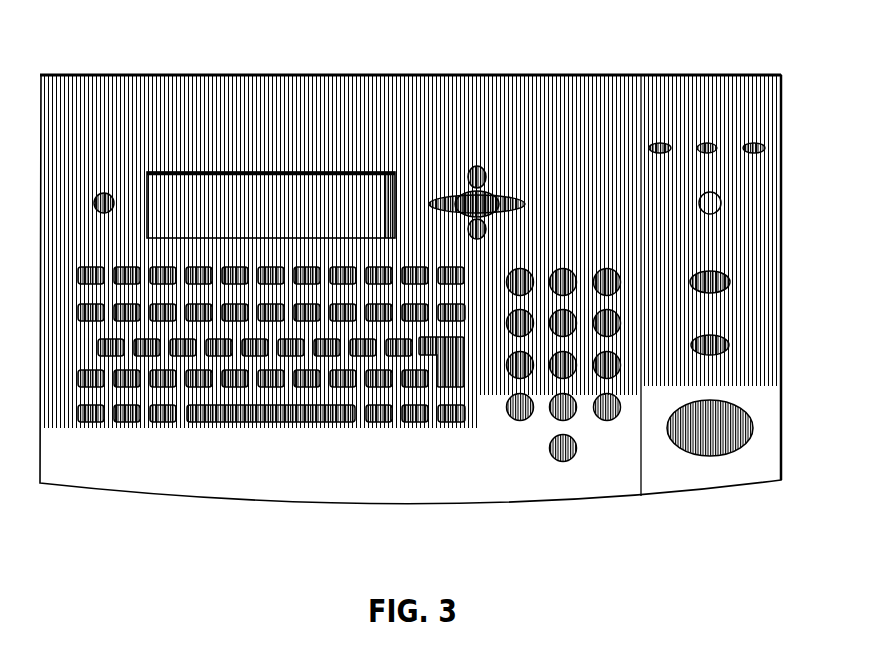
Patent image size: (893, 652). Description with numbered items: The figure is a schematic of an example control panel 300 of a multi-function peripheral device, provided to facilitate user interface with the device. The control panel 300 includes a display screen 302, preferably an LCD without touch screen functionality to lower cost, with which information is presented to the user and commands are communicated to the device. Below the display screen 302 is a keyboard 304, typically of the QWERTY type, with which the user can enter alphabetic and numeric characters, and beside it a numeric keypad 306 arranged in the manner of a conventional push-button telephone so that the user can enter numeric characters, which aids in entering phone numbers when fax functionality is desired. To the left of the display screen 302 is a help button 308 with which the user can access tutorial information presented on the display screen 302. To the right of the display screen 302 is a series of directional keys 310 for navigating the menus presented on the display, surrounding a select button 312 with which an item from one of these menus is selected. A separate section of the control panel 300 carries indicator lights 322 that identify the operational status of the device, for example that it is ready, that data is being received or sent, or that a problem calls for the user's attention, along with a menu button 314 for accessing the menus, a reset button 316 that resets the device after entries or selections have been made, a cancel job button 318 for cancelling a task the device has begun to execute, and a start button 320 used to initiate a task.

The control panel 300 is at (812, 68).
The display screen 302 is at (240, 178).
The keyboard 304 is at (68, 262).
The numeric keypad 306 is at (495, 466).
The help button 308 is at (104, 192).
The directional keys 310 is at (484, 180).
The select button 312 is at (456, 194).
The menu button 314 is at (722, 206).
The reset button 316 is at (728, 285).
The cancel job button 318 is at (728, 347).
The start button 320 is at (746, 450).
The indicator lights 322 is at (618, 147).